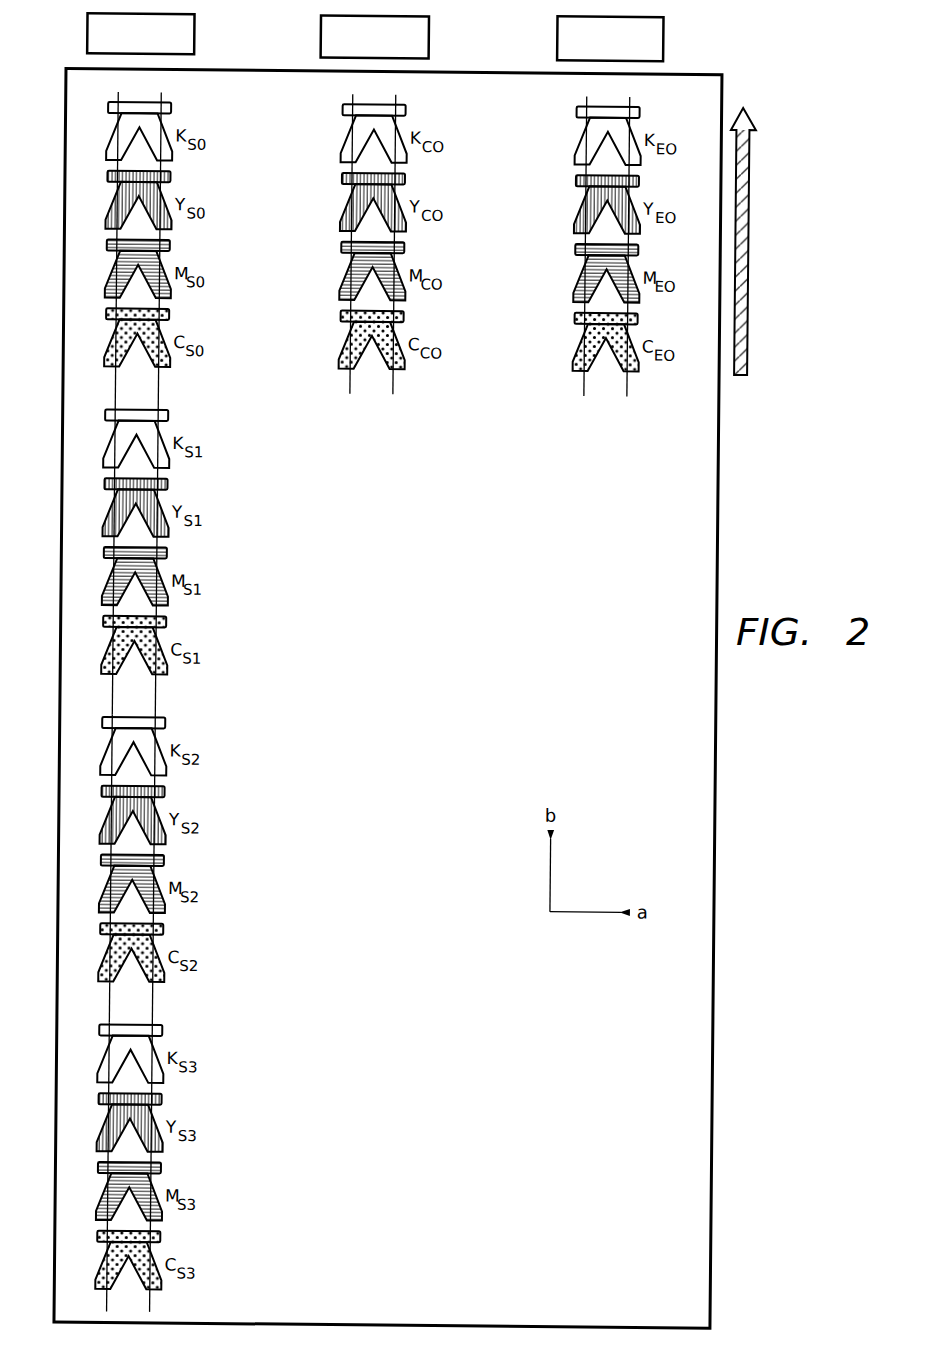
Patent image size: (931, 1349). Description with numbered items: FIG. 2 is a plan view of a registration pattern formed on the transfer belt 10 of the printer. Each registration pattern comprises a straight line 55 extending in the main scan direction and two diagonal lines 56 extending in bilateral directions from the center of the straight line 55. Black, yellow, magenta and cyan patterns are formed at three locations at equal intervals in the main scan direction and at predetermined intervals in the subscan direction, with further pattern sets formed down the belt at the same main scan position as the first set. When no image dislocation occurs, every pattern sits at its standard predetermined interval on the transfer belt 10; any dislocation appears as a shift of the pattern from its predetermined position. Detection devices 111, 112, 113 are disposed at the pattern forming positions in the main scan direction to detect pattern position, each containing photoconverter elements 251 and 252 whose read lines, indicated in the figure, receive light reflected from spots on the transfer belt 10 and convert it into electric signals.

The transfer belt 10 is at (66, 700).
The straight line 55 is at (579, 102).
The diagonal lines 56 is at (578, 155).
The detection device 111 is at (87, 33).
The detection device 112 is at (320, 32).
The detection device 113 is at (663, 33).
The photoconverter element 251 is at (121, 684).
The photoconverter element 252 is at (166, 1002).